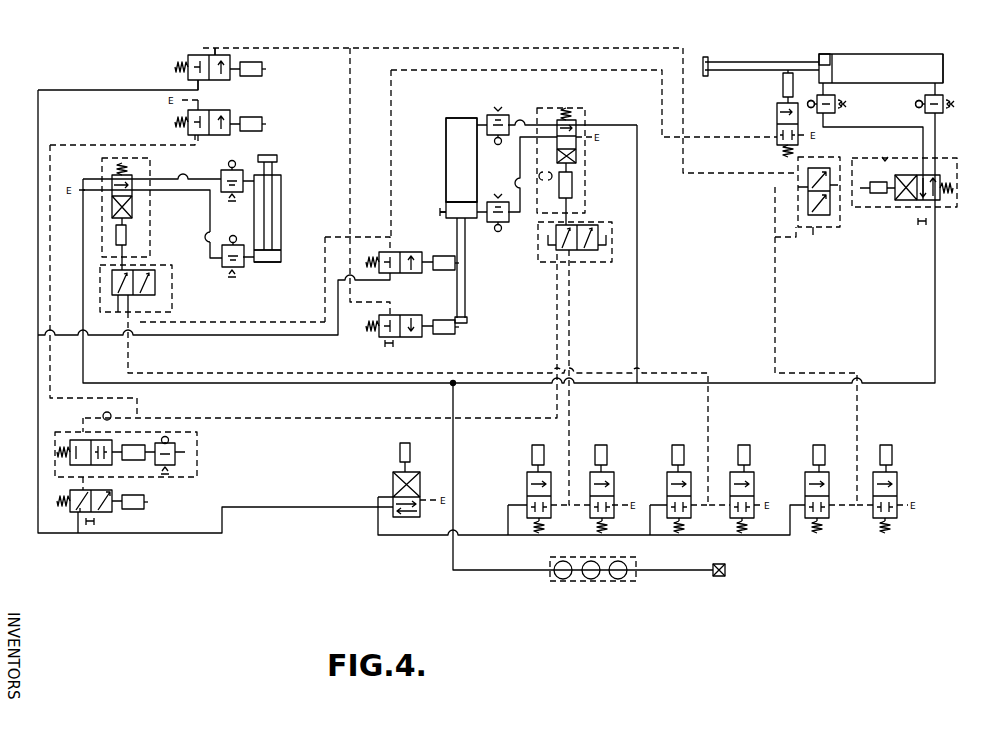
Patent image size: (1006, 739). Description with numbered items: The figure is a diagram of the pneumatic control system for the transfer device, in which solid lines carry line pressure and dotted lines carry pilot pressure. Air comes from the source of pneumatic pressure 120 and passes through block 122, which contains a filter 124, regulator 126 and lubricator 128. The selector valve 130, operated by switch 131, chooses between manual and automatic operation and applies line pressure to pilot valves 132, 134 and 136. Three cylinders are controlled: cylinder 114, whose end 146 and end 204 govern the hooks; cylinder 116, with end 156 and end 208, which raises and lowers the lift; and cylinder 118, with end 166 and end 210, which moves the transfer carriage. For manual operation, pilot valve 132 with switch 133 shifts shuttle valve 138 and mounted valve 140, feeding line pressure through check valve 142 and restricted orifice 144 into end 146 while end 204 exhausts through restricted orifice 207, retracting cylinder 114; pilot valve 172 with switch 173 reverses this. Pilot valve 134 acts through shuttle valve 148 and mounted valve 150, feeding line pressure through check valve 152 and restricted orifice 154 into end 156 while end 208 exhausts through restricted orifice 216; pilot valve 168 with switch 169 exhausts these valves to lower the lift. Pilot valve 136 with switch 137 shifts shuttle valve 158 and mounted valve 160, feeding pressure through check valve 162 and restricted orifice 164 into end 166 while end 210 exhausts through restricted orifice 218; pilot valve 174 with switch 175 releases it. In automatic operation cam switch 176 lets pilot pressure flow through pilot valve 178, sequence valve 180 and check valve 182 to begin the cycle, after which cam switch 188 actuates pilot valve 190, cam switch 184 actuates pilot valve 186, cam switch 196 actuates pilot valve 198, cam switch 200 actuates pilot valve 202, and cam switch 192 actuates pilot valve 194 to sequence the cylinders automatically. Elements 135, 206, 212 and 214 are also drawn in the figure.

The pilot valve 190 is at (215, 48).
The cam switch 188 is at (251, 76).
The pilot valve 198 is at (210, 108).
The cam switch 196 is at (251, 131).
The roller valve 212 is at (230, 167).
The restricted orifice 216 is at (211, 212).
The check valve 152 is at (226, 231).
The end of cylinder 116 208 is at (283, 186).
The cylinder 116 is at (283, 200).
The end of cylinder 116 156 is at (275, 262).
The restricted orifice 154 is at (241, 278).
The mounted valve 150 is at (141, 231).
The shuttle valve 148 is at (172, 300).
The end of cylinder 114 204 is at (446, 119).
The cylinder 114 is at (442, 139).
The end of cylinder 114 146 is at (440, 212).
The restricted orifice 207 is at (496, 107).
The roller valve 206 is at (497, 141).
The restricted orifice 144 is at (494, 194).
The check valve 142 is at (498, 230).
The mounted valve 140 is at (584, 170).
The shuttle valve 138 is at (578, 265).
The pilot valve 186 is at (408, 252).
The cam switch 184 is at (444, 256).
The pilot valve 202 is at (398, 347).
The cam switch 200 is at (443, 334).
The cylinder 118 is at (925, 52).
The end of cylinder 118 166 is at (830, 54).
The end of cylinder 118 210 is at (943, 71).
The check valve 162 is at (811, 100).
The cam switch 192 is at (783, 84).
The pilot valve 194 is at (777, 117).
The restricted orifice 164 is at (838, 98).
The roller 214 is at (917, 106).
The restricted orifice 218 is at (950, 110).
The shuttle valve 158 is at (819, 204).
The mounted valve 160 is at (957, 192).
The check valve 182 is at (104, 413).
The sequence valve 180 is at (197, 453).
The cam switch 176 is at (139, 493).
The pilot valve 178 is at (112, 513).
The switch 131 is at (410, 455).
The selector valve 130 is at (392, 480).
The switch 133 is at (532, 455).
The pilot valve 132 is at (527, 485).
The switch 173 is at (601, 445).
The pilot valve 172 is at (614, 487).
The pilot 135 is at (677, 445).
The pilot valve 134 is at (667, 482).
The switch 169 is at (744, 445).
The pilot valve 168 is at (750, 477).
The switch 137 is at (819, 445).
The pilot valve 136 is at (805, 488).
The switch 175 is at (886, 445).
The pilot valve 174 is at (902, 486).
The block 122 is at (552, 582).
The lubricator 128 is at (565, 582).
The regulator 126 is at (593, 580).
The filter 124 is at (626, 578).
The source of pneumatic pressure 120 is at (719, 576).